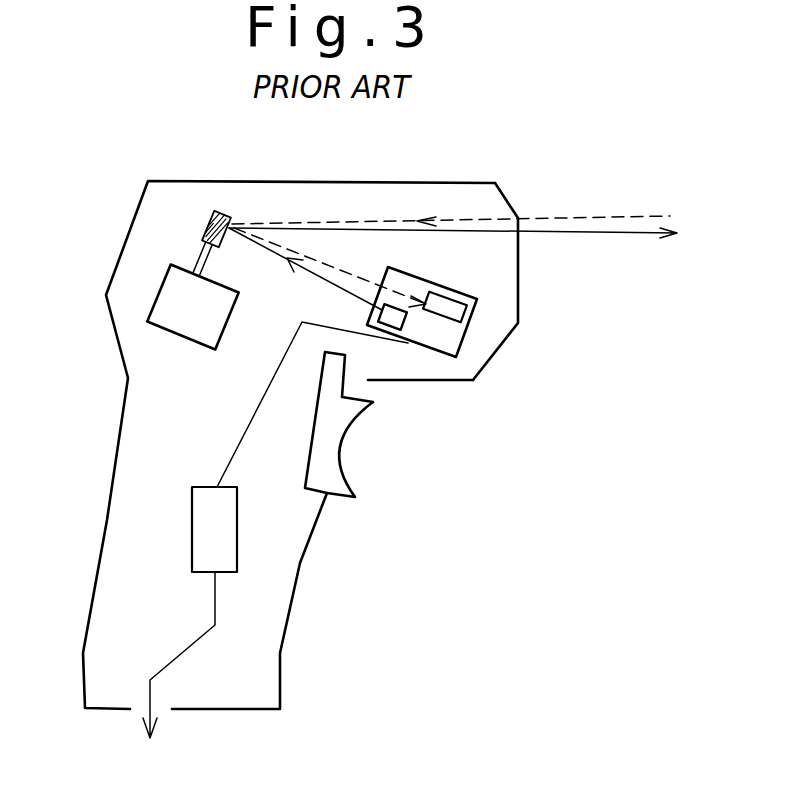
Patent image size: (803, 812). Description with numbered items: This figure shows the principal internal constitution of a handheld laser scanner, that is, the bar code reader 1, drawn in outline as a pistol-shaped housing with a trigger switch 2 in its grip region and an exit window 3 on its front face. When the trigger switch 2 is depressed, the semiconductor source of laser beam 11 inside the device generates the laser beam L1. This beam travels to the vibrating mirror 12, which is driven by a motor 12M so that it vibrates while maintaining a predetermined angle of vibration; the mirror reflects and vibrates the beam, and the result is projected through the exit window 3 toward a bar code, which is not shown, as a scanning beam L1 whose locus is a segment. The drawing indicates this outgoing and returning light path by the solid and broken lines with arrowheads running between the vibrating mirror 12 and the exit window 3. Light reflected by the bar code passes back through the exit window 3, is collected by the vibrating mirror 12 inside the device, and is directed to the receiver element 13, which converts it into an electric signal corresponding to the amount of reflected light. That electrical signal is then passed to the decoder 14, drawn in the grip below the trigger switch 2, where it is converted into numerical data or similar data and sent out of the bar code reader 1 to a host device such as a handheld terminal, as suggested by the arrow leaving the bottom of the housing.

The bar code reader 1 is at (387, 183).
The trigger switch 2 is at (337, 443).
The exit window 3 is at (519, 287).
The semiconductor source of laser beam 11 is at (430, 325).
The vibrating mirror 12 is at (222, 212).
The motor 12M is at (160, 312).
The receiver element 13 is at (456, 309).
The decoder 14 is at (227, 553).
The laser beam L1 is at (635, 232).